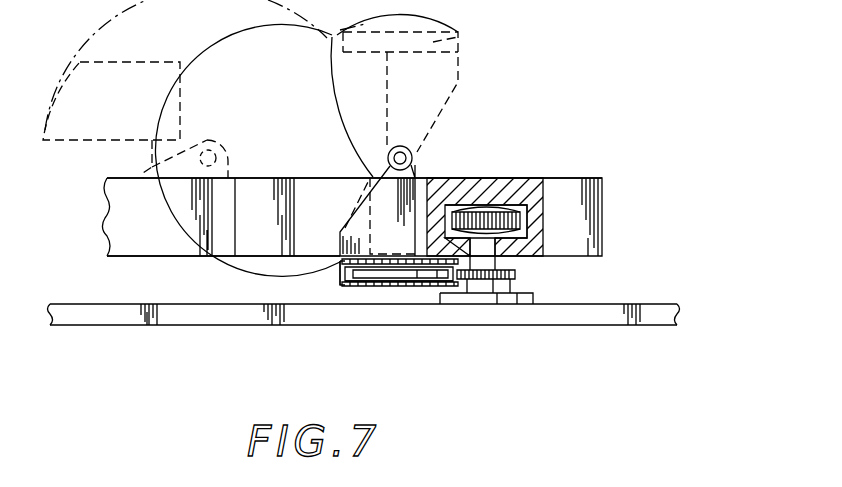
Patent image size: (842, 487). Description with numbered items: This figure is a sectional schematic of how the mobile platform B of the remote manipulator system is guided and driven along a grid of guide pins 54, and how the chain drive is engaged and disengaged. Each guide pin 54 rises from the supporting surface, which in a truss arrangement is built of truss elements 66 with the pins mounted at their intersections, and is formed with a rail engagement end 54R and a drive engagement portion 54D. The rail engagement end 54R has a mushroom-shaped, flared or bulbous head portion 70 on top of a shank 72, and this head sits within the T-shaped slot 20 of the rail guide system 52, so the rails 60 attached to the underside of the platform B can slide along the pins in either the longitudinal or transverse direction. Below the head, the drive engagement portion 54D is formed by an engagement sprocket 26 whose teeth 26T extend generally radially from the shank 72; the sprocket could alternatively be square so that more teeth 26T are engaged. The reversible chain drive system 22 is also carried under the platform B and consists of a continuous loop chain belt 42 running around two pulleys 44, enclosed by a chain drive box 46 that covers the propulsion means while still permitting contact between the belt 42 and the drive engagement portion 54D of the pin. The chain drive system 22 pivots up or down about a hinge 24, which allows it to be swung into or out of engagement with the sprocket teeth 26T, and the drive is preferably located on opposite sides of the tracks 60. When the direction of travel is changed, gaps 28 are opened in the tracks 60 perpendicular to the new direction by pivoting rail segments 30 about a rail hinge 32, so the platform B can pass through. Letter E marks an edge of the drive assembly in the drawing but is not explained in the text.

The T-shaped slot 20 is at (457, 178).
The chain drive system 22 is at (392, 289).
The hinge 24 is at (414, 158).
The engagement sprocket 26 is at (519, 277).
The teeth 26T is at (483, 281).
The gap 28 is at (353, 176).
The rail segment 30 is at (120, 90).
The rail hinge 32 is at (208, 148).
The chain belt 42 is at (340, 287).
The pulley 44 is at (373, 287).
The chain drive box 46 is at (365, 287).
The rail guide system 52 is at (494, 175).
The guide pin 54 is at (542, 263).
The rail engagement end 54R is at (533, 200).
The drive engagement portion 54D is at (510, 282).
The rail 60 is at (130, 211).
The truss element 66 is at (655, 315).
The head portion 70 is at (522, 220).
The shank 72 is at (490, 258).
The platform B is at (141, 259).
The edge of slide E is at (334, 272).